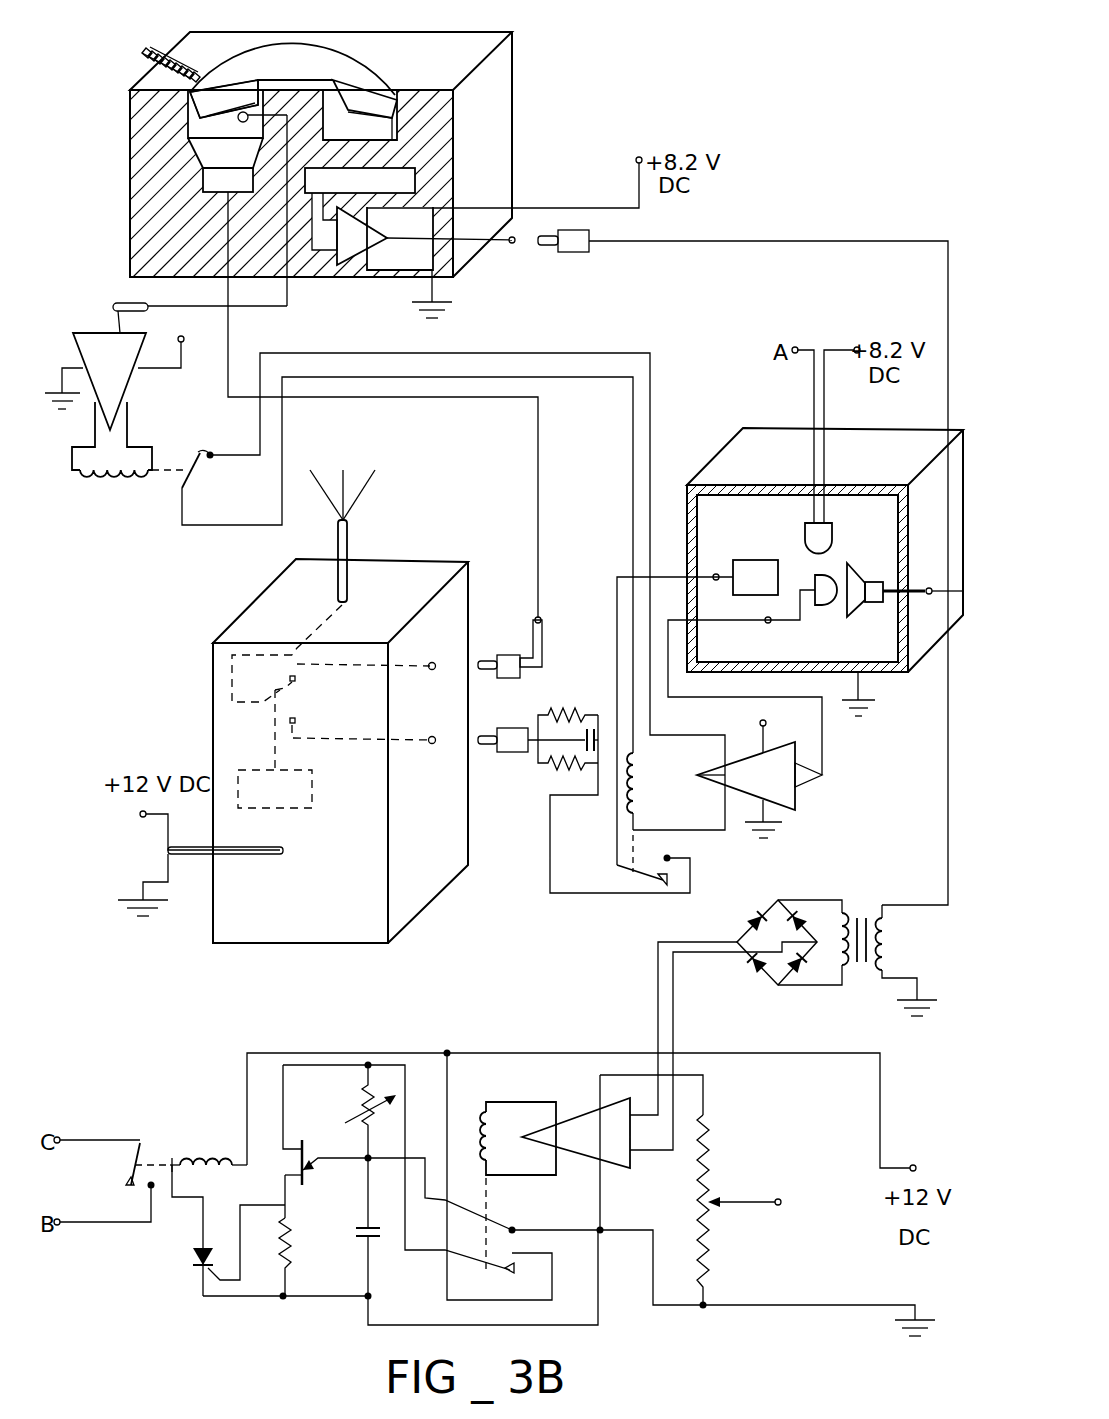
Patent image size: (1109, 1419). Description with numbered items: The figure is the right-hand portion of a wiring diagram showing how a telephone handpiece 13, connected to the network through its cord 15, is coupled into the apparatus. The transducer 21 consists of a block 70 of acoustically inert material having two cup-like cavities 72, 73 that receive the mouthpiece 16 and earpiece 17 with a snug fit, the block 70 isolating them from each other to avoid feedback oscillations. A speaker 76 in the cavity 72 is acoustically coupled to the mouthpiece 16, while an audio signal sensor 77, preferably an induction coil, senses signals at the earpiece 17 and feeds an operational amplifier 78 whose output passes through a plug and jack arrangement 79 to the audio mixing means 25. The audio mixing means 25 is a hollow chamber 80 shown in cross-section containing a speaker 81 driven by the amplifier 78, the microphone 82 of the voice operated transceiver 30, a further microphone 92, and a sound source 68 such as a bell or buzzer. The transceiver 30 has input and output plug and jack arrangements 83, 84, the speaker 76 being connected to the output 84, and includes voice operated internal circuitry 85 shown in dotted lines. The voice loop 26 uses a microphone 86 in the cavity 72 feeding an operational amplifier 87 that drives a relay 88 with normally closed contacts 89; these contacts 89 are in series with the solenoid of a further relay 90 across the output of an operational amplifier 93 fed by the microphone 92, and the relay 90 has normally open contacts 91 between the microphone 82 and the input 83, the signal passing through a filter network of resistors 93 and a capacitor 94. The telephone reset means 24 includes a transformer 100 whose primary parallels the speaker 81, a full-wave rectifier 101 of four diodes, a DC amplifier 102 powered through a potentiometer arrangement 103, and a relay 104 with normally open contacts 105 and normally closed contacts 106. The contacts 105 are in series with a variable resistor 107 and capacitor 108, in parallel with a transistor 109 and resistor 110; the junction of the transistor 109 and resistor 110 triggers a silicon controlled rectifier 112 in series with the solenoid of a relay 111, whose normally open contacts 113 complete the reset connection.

The handpiece 13 is at (305, 58).
The cord 15 is at (145, 50).
The mouthpiece 16 is at (223, 75).
The earpiece 17 is at (370, 75).
The transducer 21 is at (118, 163).
The telephone reset means 24 is at (522, 1027).
The audio mixing means 25 is at (698, 448).
The voice loop 26 is at (95, 500).
The voice operated transceiver 30 is at (302, 940).
The sound source 68 is at (805, 530).
The block 70 is at (493, 82).
The cavity 72 is at (210, 128).
The cavity 73 is at (383, 130).
The speaker 76 is at (215, 182).
The audio signal sensor 77 is at (407, 180).
The operational amplifier 78 is at (345, 253).
The plug and jack arrangement 79 is at (521, 247).
The chamber 80 is at (873, 468).
The speaker 81 is at (856, 560).
The microphone 82 is at (750, 570).
The input plug and jack arrangement 83 is at (448, 742).
The output plug and jack arrangement 84 is at (443, 665).
The internal circuitry 85 is at (327, 765).
The microphone 86 is at (246, 122).
The operational amplifier 87 is at (90, 347).
The relay 88 is at (147, 480).
The normally closed contacts 89 is at (200, 463).
The relay 90 is at (642, 820).
The normally open contacts 91 is at (653, 865).
The microphone 92 is at (818, 605).
The operational amplifier 93 is at (578, 712).
The capacitor 94 is at (590, 736).
The transformer 100 is at (862, 912).
The full-wave rectifier 101 is at (762, 985).
The DC amplifier 102 is at (615, 1150).
The potentiometer arrangement 103 is at (718, 1235).
The relay 104 is at (480, 1120).
The normally open contacts 105 is at (512, 1258).
The normally closed contacts 106 is at (515, 1228).
The variable resistor 107 is at (362, 1102).
The capacitor 108 is at (360, 1225).
The transistor 109 is at (310, 1150).
The resistor 110 is at (290, 1240).
The relay 111 is at (157, 1150).
The silicon controlled rectifier 112 is at (193, 1258).
The normally open contacts 113 is at (140, 1193).